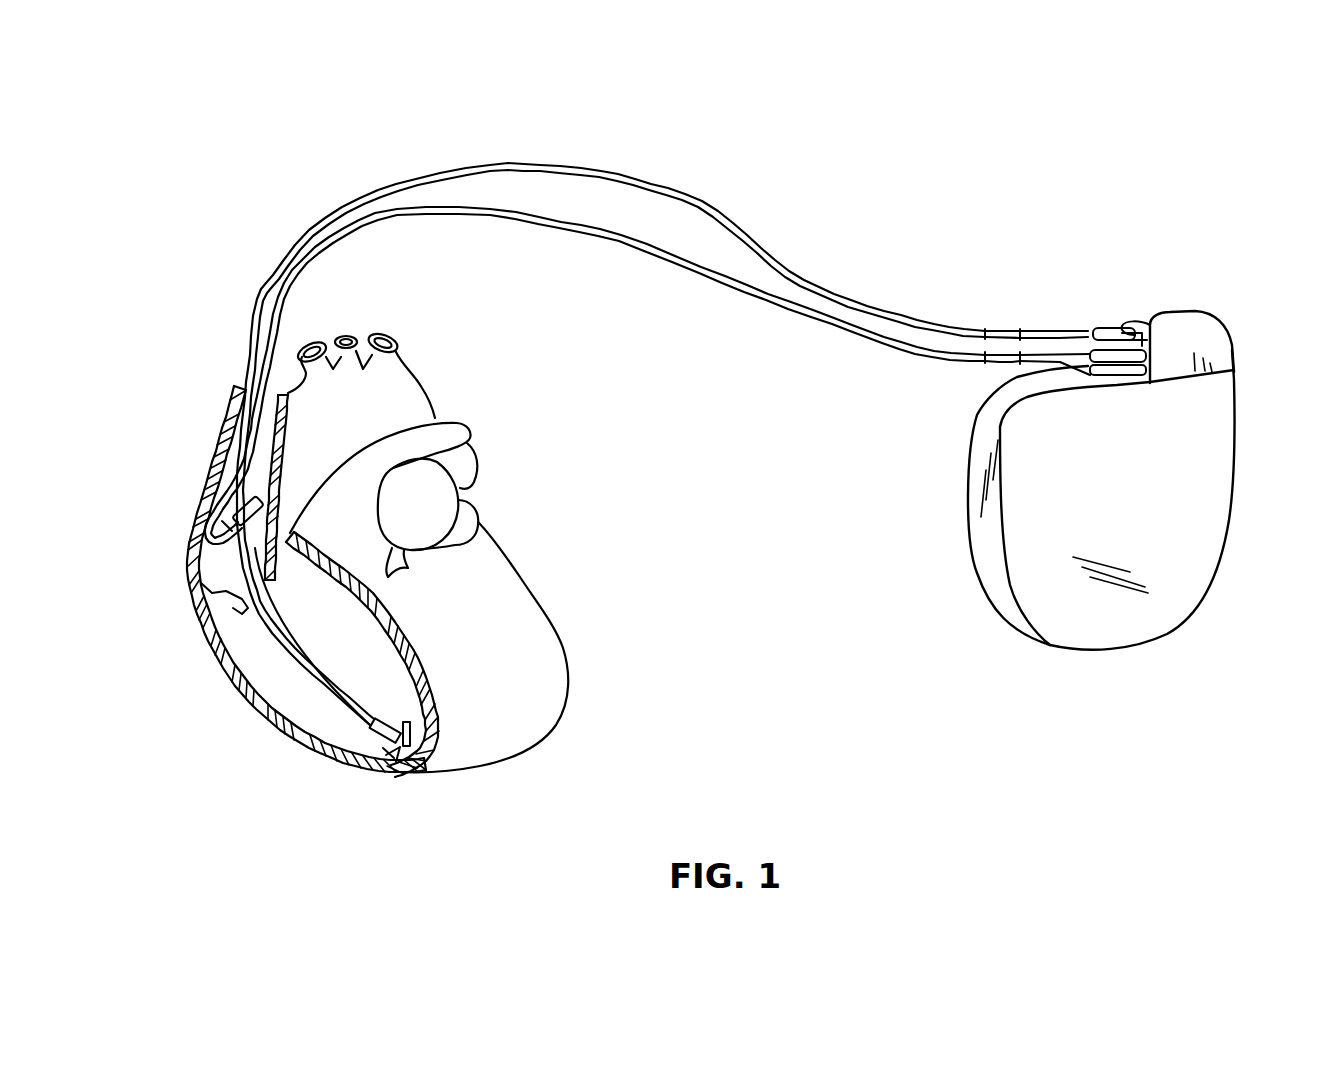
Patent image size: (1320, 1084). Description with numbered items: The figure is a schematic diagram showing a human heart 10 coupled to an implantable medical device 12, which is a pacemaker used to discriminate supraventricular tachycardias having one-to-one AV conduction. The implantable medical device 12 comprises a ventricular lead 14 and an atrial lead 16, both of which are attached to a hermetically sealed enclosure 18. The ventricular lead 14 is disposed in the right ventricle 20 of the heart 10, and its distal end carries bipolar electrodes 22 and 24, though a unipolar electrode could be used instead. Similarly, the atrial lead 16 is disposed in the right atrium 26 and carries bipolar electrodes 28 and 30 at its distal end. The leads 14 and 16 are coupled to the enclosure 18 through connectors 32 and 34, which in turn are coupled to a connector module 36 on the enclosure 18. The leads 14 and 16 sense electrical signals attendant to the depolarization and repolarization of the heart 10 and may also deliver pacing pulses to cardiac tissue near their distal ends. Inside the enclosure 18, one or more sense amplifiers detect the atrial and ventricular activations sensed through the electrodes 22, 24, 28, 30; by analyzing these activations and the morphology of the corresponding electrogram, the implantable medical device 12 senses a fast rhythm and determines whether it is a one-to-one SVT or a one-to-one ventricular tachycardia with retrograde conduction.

The heart 10 is at (556, 642).
The implantable medical device 12 is at (795, 151).
The ventricular lead 14 is at (540, 229).
The atrial lead 16 is at (548, 164).
The hermetically sealed enclosure 18 is at (1112, 648).
The right ventricle 20 is at (272, 685).
The bipolar electrode 22 is at (393, 762).
The bipolar electrode 24 is at (360, 762).
The right atrium 26 is at (222, 558).
The bipolar electrode 28 is at (258, 503).
The bipolar electrode 30 is at (224, 516).
The connector 32 is at (1087, 377).
The connector 34 is at (1080, 327).
The connector module 36 is at (1170, 312).